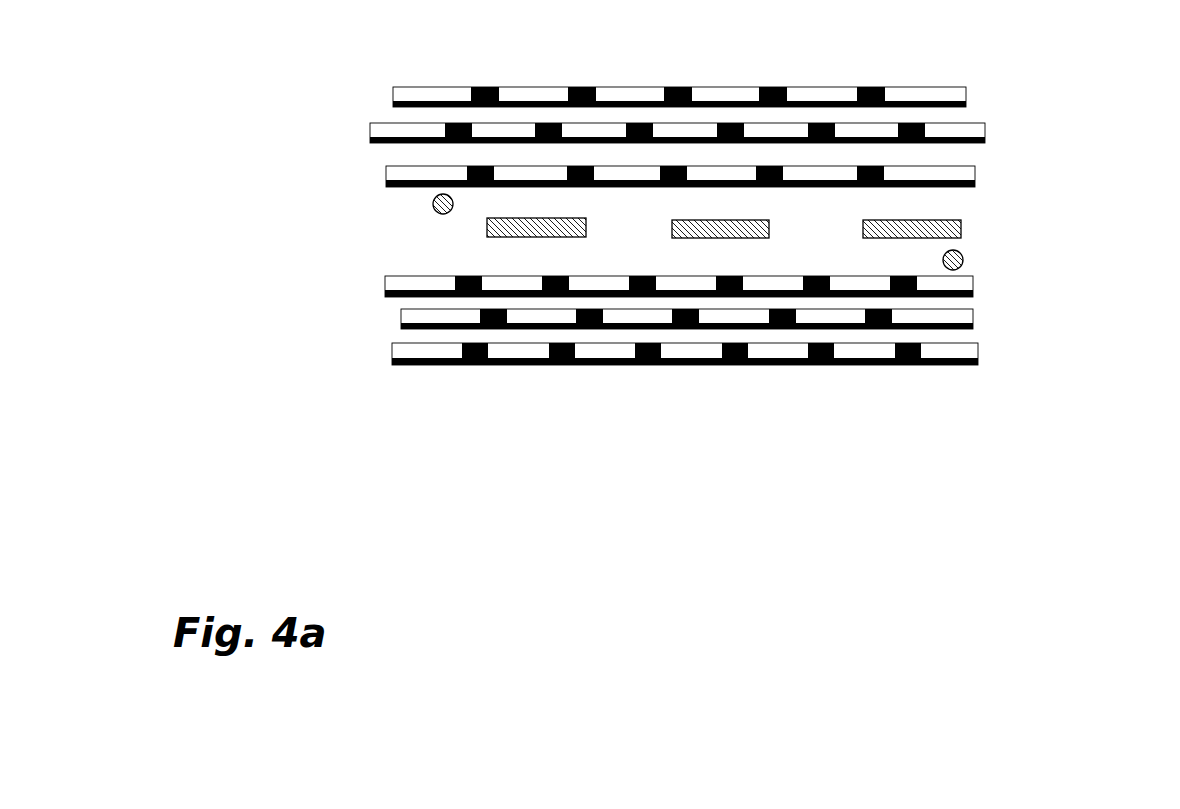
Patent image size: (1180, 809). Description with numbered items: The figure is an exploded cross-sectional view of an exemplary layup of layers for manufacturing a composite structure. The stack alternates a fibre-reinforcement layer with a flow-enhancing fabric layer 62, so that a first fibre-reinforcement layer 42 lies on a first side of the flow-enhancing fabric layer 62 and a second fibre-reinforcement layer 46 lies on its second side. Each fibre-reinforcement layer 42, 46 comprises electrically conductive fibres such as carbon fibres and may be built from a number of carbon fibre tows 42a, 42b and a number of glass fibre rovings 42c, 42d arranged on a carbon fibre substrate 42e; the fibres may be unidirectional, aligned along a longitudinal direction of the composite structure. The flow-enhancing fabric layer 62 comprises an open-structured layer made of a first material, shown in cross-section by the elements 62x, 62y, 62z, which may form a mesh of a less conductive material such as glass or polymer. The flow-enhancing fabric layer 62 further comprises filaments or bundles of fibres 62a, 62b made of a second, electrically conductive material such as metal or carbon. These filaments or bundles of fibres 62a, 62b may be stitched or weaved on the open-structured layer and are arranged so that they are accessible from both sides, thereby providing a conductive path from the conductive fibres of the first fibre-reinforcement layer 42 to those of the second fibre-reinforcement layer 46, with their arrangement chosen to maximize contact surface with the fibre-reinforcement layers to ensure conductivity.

The first fibre-reinforcement layer 42 is at (767, 118).
The carbon fibre substrate 42e is at (729, 78).
The carbon fibre tow 42a is at (482, 365).
The carbon fibre tow 42b is at (562, 365).
The glass fibre roving 42c is at (672, 365).
The glass fibre roving 42d is at (758, 365).
The second fibre-reinforcement layer 46 is at (769, 376).
The flow-enhancing fabric layer 62 is at (604, 165).
The filament or bundle of fibres 62a is at (443, 194).
The filament or bundle of fibres 62b is at (963, 258).
The open-structured layer element 62x is at (487, 226).
The open-structured layer element 62y is at (672, 229).
The open-structured layer element 62z is at (863, 229).